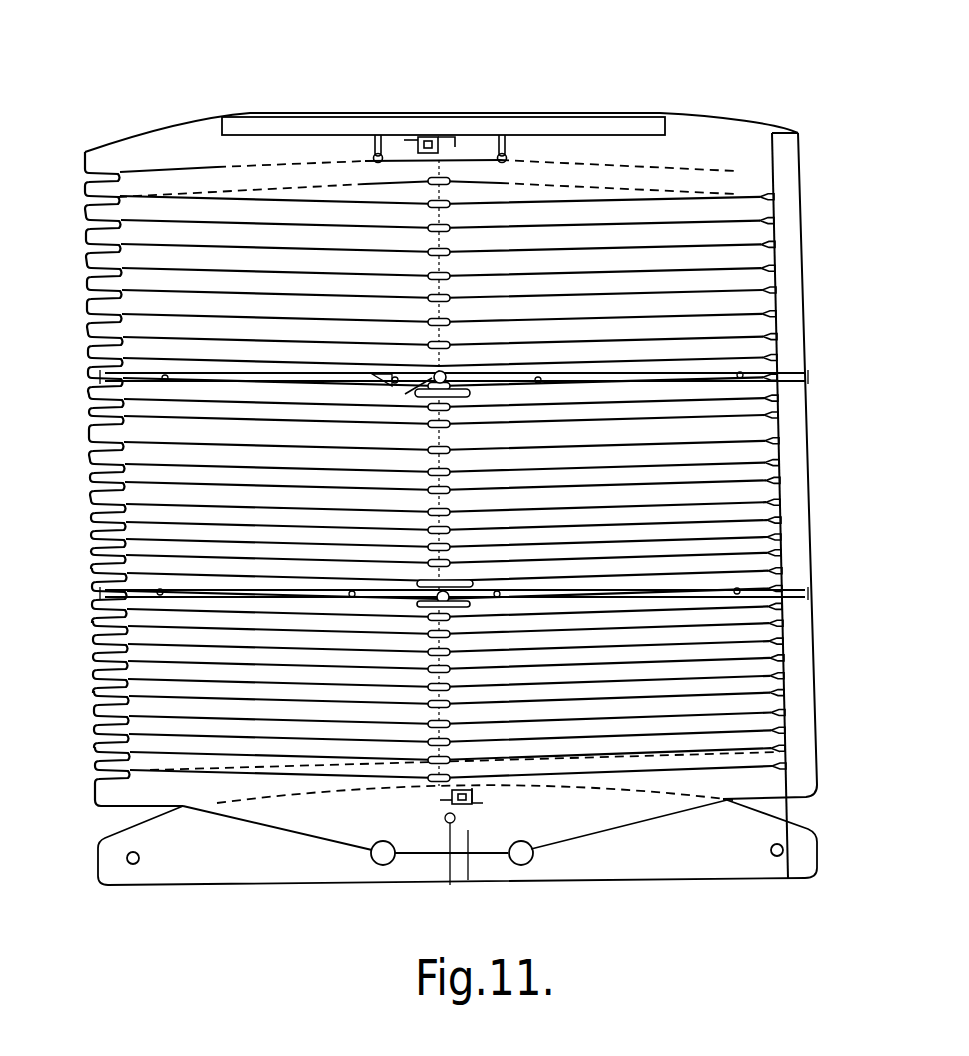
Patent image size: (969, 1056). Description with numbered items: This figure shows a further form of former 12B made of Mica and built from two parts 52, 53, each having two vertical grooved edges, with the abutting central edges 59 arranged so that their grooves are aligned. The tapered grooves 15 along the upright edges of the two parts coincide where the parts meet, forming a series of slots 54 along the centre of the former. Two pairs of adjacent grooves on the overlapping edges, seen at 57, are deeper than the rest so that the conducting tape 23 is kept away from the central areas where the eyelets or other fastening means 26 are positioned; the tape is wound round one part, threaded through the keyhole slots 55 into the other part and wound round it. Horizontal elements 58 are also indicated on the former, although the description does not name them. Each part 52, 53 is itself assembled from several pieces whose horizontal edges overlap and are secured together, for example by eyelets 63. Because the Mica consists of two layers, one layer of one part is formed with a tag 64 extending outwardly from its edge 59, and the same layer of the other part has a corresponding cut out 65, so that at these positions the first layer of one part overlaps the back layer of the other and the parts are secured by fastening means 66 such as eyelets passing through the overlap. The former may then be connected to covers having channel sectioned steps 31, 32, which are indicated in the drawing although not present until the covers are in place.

The former 12B is at (185, 92).
The tapered grooves 15 is at (100, 373).
The conducting tape 23 is at (290, 225).
The eyelets or other fastening means 26 is at (378, 374).
The channel sectioned step 31 is at (805, 582).
The channel sectioned step 32 is at (622, 117).
The former part 52 is at (193, 217).
The former part 53 is at (725, 210).
The slots 54 is at (450, 253).
The keyhole slots 55 is at (375, 145).
The deeper grooves 57 is at (455, 374).
The support rods 58 is at (262, 383).
The abutting central edges 59 is at (430, 242).
The eyelets 63 is at (165, 375).
The tag 64 is at (455, 145).
The cut out 65 is at (420, 138).
The fastening means 66 is at (440, 137).